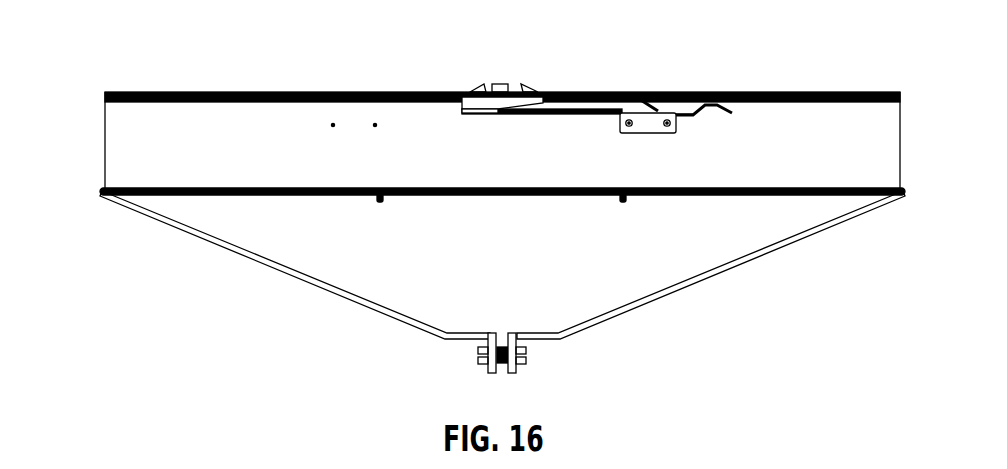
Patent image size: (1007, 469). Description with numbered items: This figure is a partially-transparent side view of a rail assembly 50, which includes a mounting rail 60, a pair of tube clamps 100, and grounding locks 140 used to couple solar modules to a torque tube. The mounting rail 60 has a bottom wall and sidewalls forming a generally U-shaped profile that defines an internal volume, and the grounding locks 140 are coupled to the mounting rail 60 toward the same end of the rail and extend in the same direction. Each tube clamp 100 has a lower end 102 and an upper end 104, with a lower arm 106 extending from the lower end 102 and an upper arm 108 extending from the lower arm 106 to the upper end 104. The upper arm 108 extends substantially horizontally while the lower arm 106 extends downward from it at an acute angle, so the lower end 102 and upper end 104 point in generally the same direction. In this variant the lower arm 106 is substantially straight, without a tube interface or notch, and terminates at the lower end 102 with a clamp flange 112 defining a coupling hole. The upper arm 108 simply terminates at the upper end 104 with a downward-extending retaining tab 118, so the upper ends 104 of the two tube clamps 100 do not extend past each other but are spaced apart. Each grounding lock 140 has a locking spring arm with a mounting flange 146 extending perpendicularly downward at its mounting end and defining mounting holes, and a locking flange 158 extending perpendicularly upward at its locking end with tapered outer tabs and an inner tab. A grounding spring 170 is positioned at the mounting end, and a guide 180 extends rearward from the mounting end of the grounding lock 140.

The rail assembly 50 is at (140, 34).
The mounting rail 60 is at (104, 152).
The tube clamp 100 is at (233, 253).
The lower end 102 is at (492, 320).
The upper end 104 is at (370, 172).
The lower arm 106 is at (358, 307).
The upper arm 108 is at (215, 187).
The clamp flange 112 is at (490, 375).
The retaining tab 118 is at (380, 200).
The grounding lock 140 is at (553, 122).
The mounting flange 146 is at (655, 128).
The locking flange 158 is at (513, 83).
The grounding spring 170 is at (656, 100).
The guide 180 is at (715, 117).